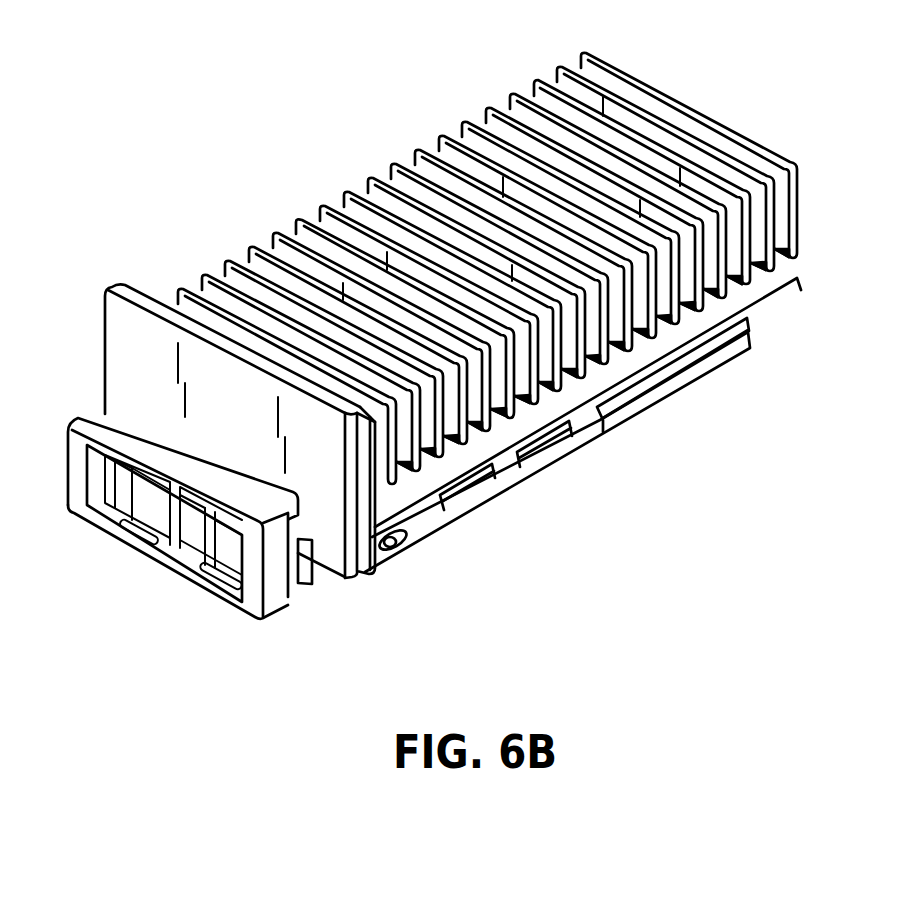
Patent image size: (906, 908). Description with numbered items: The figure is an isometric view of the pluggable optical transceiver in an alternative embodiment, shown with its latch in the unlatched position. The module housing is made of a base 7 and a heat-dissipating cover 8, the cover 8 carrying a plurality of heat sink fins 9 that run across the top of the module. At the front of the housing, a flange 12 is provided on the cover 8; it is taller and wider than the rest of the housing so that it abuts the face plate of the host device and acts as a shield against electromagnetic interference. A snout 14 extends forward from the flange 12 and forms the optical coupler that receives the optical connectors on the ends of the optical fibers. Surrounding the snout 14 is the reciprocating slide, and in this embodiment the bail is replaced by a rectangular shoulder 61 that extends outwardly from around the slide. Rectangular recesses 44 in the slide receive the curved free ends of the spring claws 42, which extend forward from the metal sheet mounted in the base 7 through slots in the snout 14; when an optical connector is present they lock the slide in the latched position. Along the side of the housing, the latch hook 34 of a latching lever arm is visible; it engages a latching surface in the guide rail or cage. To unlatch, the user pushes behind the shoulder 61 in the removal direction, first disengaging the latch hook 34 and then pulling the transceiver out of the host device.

The base 7 is at (707, 352).
The heat-dissipating cover 8 is at (782, 277).
The heat sink fins 9 is at (482, 120).
The flange 12 is at (113, 318).
The snout 14 is at (153, 433).
The latch hook 34 is at (395, 548).
The spring claws 42 is at (118, 521).
The rectangular recesses 44 is at (133, 545).
The rectangular shoulder 61 is at (75, 455).